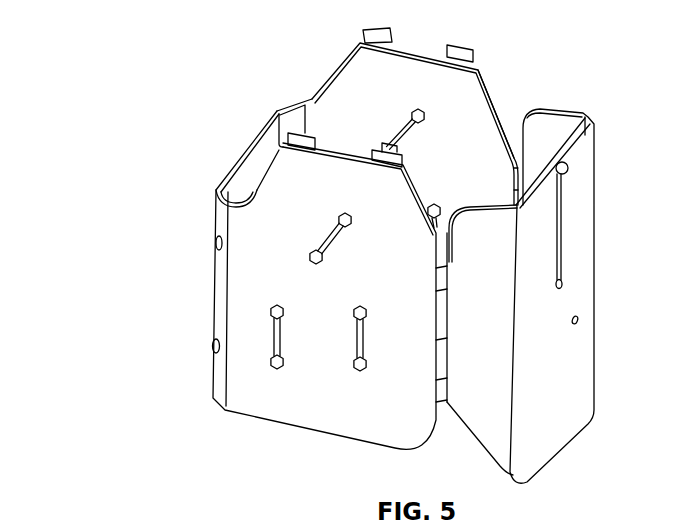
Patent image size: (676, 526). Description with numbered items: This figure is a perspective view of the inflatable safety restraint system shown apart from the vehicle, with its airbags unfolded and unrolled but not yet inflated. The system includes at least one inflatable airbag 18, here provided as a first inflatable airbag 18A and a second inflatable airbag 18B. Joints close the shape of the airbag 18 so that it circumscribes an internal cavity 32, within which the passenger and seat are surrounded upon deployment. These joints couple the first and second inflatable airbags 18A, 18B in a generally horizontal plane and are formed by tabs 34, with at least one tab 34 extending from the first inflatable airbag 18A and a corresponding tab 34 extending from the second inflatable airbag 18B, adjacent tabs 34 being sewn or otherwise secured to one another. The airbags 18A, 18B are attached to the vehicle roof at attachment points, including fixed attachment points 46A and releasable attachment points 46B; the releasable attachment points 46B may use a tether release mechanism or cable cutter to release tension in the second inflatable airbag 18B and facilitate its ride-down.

The inflatable airbag 18 is at (199, 216).
The first inflatable airbag 18A is at (585, 275).
The second inflatable airbag 18B is at (484, 142).
The internal cavity 32 is at (495, 91).
The tab 34 is at (442, 322).
The fixed attachment point 46A is at (298, 134).
The releasable attachment point 46B is at (380, 148).